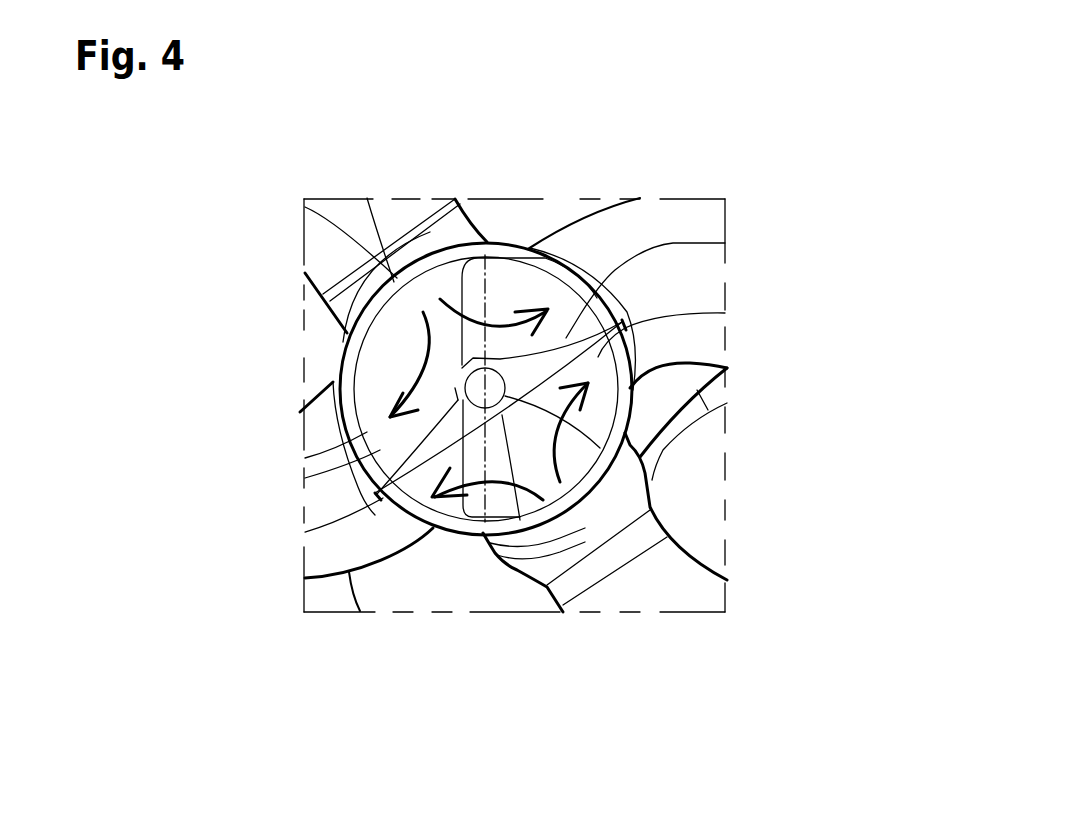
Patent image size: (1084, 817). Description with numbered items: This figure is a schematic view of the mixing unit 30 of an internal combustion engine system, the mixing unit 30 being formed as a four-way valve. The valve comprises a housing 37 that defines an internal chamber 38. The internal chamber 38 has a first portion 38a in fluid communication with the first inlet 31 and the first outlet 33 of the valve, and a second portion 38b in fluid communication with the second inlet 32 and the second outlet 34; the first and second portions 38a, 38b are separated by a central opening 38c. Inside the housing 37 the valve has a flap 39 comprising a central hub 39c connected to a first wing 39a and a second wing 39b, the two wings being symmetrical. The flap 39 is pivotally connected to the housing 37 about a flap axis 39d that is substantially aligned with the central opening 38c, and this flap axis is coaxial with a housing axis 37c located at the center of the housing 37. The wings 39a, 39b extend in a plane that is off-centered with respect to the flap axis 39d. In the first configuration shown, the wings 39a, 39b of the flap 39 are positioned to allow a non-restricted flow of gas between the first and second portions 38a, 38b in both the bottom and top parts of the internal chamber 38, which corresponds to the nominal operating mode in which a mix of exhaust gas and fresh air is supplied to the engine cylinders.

The mixing unit 30 is at (316, 341).
The first inlet 31 is at (428, 258).
The second inlet 32 is at (583, 498).
The first outlet 33 is at (365, 452).
The second outlet 34 is at (553, 338).
The housing 37 is at (522, 246).
The housing axis 37c is at (644, 605).
The internal chamber 38 is at (527, 297).
The first portion 38a is at (380, 396).
The second portion 38b is at (590, 421).
The central opening 38c is at (455, 388).
The flap 39 is at (583, 352).
The first wing 39a is at (430, 460).
The second wing 39b is at (587, 348).
The central hub 39c is at (520, 520).
The flap axis 39d is at (585, 450).